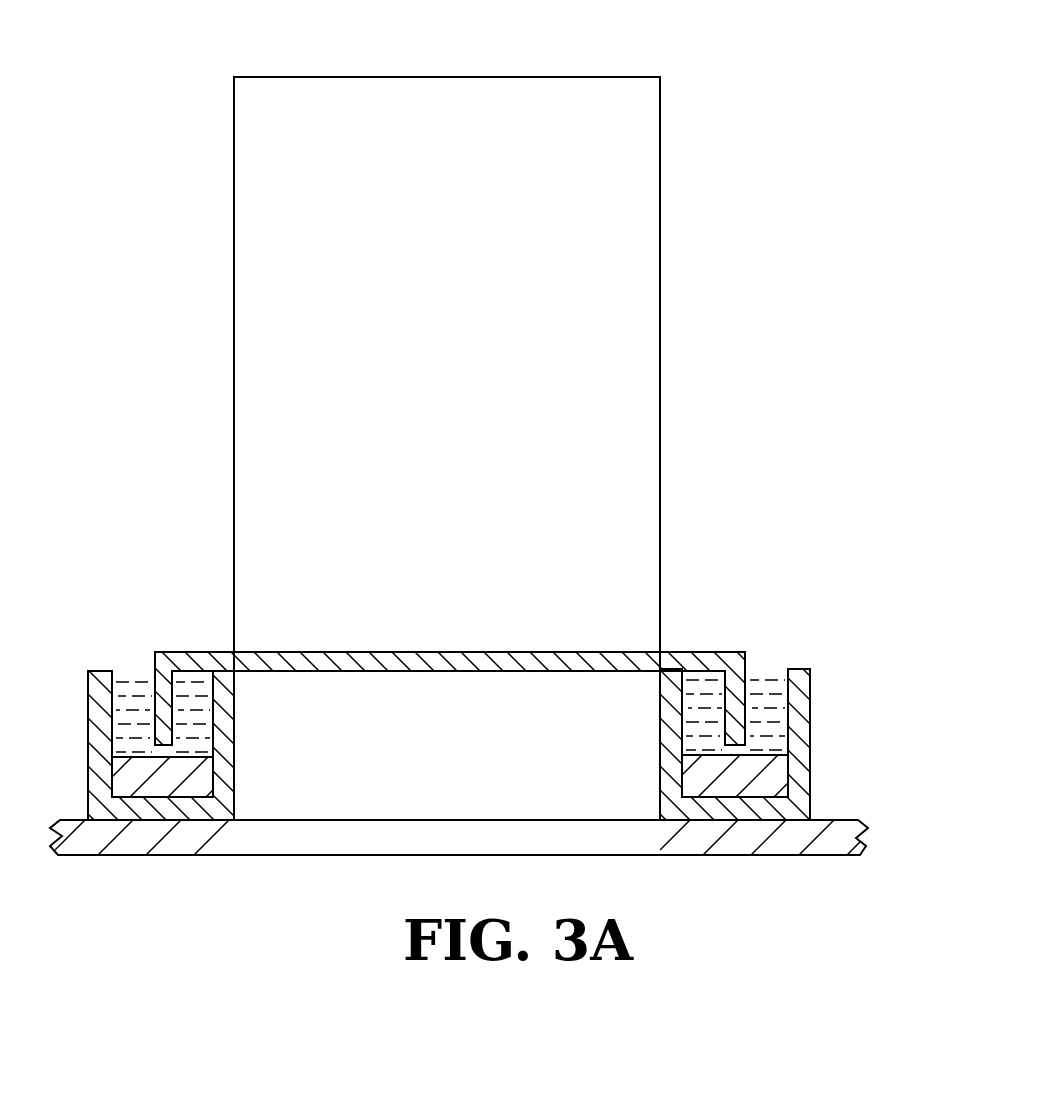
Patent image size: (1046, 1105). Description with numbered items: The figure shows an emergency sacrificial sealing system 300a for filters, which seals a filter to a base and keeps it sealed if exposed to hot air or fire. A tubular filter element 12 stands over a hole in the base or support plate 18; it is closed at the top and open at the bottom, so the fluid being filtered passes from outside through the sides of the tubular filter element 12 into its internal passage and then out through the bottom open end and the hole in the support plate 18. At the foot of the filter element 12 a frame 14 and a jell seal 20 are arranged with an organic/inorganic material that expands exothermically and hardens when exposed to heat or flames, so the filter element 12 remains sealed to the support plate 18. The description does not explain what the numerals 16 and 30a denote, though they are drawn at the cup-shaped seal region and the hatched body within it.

The emergency sacrificial sealing system 300a is at (596, 46).
The tubular filter element 12 is at (487, 132).
The frame 14 is at (208, 652).
The trough 16 is at (811, 746).
The base or support plate 18 is at (190, 856).
The jell seal 20 is at (768, 680).
The compressible pad 30a is at (705, 781).